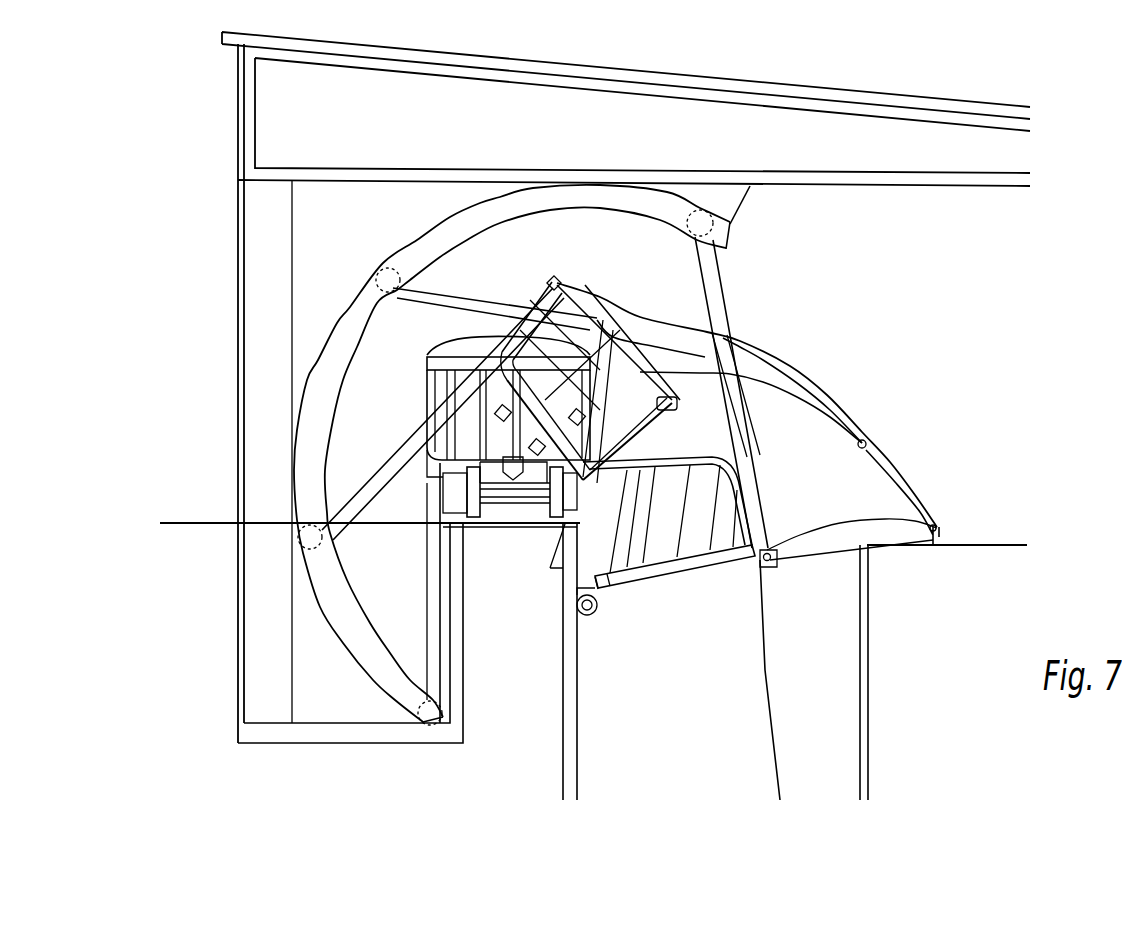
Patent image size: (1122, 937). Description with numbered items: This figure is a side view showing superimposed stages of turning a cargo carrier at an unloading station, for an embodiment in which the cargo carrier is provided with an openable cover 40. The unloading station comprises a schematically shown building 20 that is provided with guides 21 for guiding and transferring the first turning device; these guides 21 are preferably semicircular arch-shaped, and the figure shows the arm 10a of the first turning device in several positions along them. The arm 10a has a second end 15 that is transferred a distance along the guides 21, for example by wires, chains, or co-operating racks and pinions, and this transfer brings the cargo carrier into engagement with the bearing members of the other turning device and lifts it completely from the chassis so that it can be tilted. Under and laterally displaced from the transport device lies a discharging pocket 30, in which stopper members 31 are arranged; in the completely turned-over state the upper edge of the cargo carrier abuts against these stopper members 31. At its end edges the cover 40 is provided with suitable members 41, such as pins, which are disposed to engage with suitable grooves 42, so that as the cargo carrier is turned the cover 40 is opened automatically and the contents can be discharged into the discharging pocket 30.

The building 20 is at (202, 147).
The guides 21 is at (553, 205).
The second end 15 is at (713, 219).
The arm 10a is at (480, 296).
The discharging pocket 30 is at (688, 704).
The stopper members 31 is at (770, 567).
The openable cover 40 is at (797, 383).
The members 41 is at (867, 440).
The grooves 42 is at (910, 487).